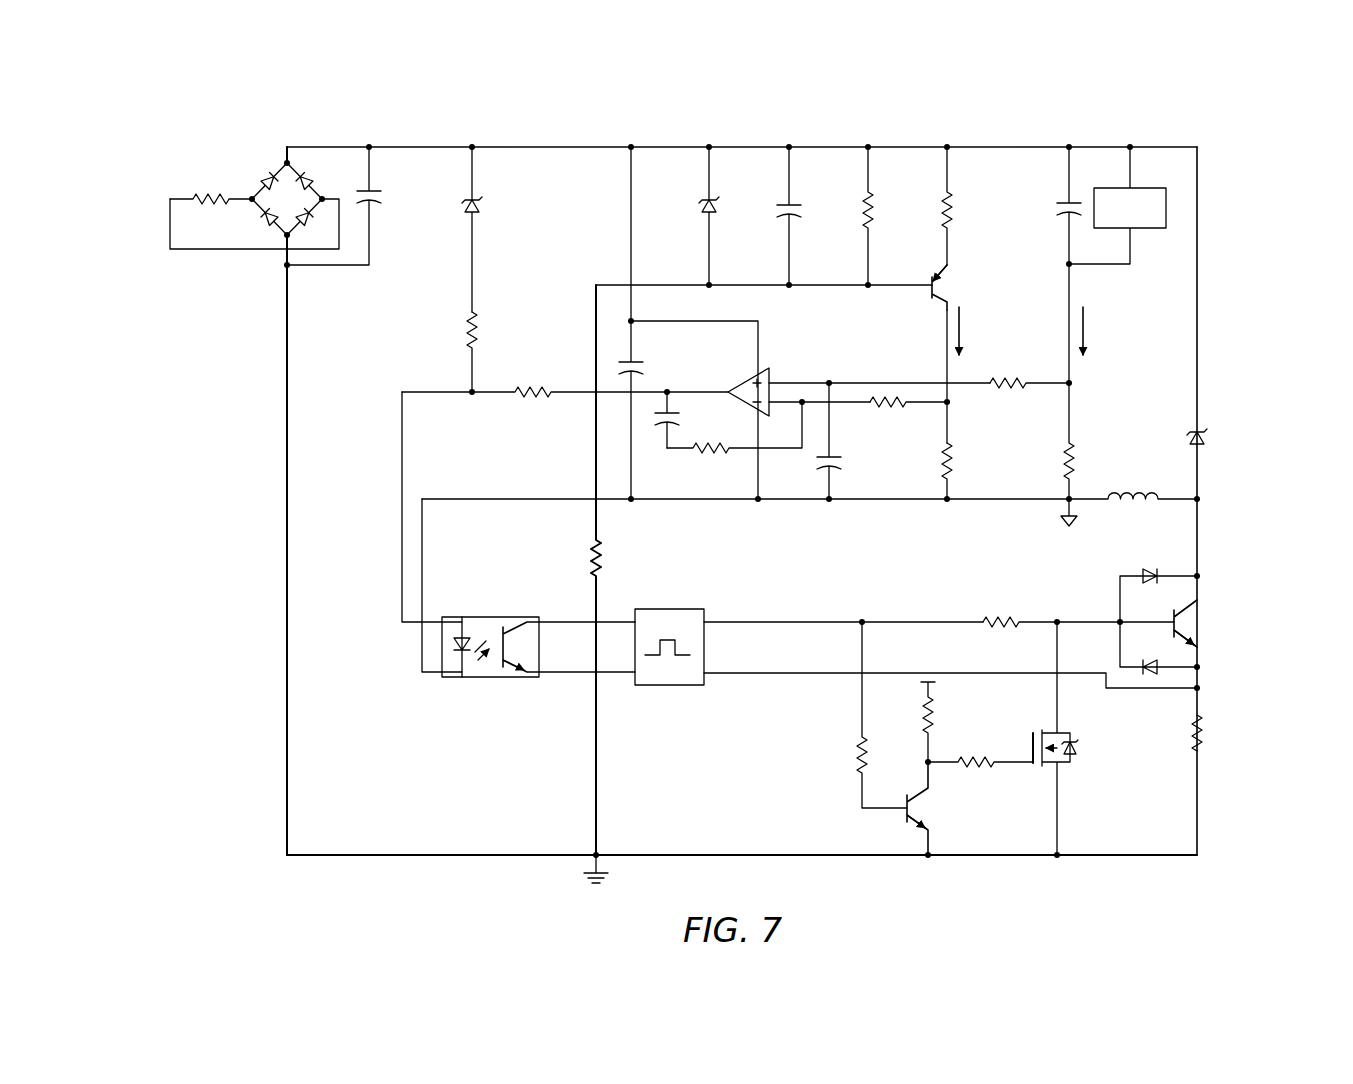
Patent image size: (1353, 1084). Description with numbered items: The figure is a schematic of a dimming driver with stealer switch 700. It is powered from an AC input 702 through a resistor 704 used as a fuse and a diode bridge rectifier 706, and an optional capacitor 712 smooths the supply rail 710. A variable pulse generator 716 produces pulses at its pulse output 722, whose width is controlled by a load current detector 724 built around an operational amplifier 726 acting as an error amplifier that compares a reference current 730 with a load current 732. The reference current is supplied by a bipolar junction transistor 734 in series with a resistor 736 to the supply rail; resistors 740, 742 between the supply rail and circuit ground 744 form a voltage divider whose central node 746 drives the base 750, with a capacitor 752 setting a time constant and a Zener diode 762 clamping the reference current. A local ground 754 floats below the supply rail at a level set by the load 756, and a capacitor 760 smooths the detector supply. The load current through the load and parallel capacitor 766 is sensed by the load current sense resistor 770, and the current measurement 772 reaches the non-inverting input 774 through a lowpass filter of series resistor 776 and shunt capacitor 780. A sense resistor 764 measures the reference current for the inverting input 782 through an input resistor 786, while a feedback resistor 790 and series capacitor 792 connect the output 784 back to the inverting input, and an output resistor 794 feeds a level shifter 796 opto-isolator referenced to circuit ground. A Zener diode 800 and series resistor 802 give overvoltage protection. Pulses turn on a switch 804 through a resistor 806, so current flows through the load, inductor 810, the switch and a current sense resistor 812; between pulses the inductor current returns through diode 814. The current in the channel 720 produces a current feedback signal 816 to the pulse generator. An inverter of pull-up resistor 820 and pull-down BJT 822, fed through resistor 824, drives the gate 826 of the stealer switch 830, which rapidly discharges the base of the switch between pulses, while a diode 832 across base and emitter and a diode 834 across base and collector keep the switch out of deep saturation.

The dimming driver with stealer switch 700 is at (1190, 140).
The AC input 702 is at (162, 250).
The resistor 704 is at (200, 197).
The rectifier 706 is at (283, 162).
The supply rail 710 is at (542, 146).
The capacitor 712 is at (388, 198).
The variable pulse generator 716 is at (690, 608).
The channel 720 is at (703, 113).
The pulse output 722 is at (727, 620).
The load current detector 724 is at (848, 345).
The operational amplifier 726 is at (748, 378).
The reference current 730 is at (979, 331).
The load current 732 is at (1104, 331).
The bipolar junction transistor 734 is at (949, 288).
The resistor 736 is at (952, 205).
The resistor 740 is at (872, 205).
The resistor 742 is at (607, 554).
The circuit ground 744 is at (582, 883).
The central node 746 is at (814, 283).
The base 750 is at (934, 278).
The capacitor 752 is at (802, 206).
The local ground 754 is at (1066, 530).
The load 756 is at (1147, 230).
The capacitor 760 is at (634, 362).
The Zener diode 762 is at (718, 209).
The sense resistor 764 is at (959, 458).
The capacitor 766 is at (1062, 205).
The load current sense resistor 770 is at (1072, 456).
The current measurement 772 is at (916, 380).
The non-inverting input 774 is at (790, 370).
The series resistor 776 is at (1006, 380).
The shunt capacitor 780 is at (836, 458).
The inverting input 782 is at (770, 406).
The output 784 is at (714, 390).
The input resistor 786 is at (895, 404).
The feedback resistor 790 is at (698, 450).
The capacitor 792 is at (676, 417).
The output resistor 794 is at (541, 390).
The level shifter 796 is at (491, 615).
The Zener diode 800 is at (486, 206).
The series resistor 802 is at (481, 322).
The switch 804 is at (1190, 615).
The resistor 806 is at (990, 620).
The inductor 810 is at (1142, 498).
The current sense resistor 812 is at (1204, 730).
The diode 814 is at (1188, 438).
The current feedback signal 816 is at (755, 670).
The pull-up resistor 820 is at (935, 724).
The pull-down BJT 822 is at (905, 818).
The resistor 824 is at (856, 760).
The gate 826 is at (1023, 760).
The stealer switch 830 is at (1044, 766).
The diode 832 is at (1160, 648).
The diode 834 is at (1139, 575).